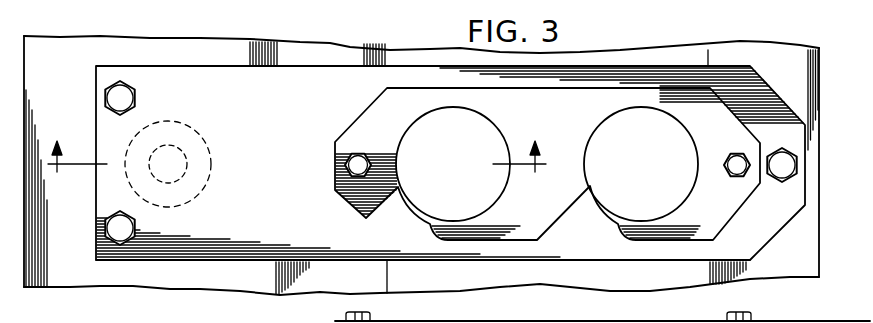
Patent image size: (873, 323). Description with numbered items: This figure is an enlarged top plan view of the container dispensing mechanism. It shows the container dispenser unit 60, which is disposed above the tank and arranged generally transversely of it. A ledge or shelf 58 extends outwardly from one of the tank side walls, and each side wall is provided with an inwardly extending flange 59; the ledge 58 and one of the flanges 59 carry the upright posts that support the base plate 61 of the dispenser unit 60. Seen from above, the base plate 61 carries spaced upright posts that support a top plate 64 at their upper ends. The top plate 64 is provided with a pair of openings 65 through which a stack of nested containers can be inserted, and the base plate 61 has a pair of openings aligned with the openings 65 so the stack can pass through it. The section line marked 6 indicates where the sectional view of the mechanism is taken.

The ledge 58 is at (133, 283).
The flange 59 is at (312, 292).
The container dispenser unit 60 is at (228, 265).
The base plate 61 is at (225, 88).
The top plate 64 is at (355, 192).
The openings 65 is at (492, 128).
The section line 6- 6 is at (297, 145).